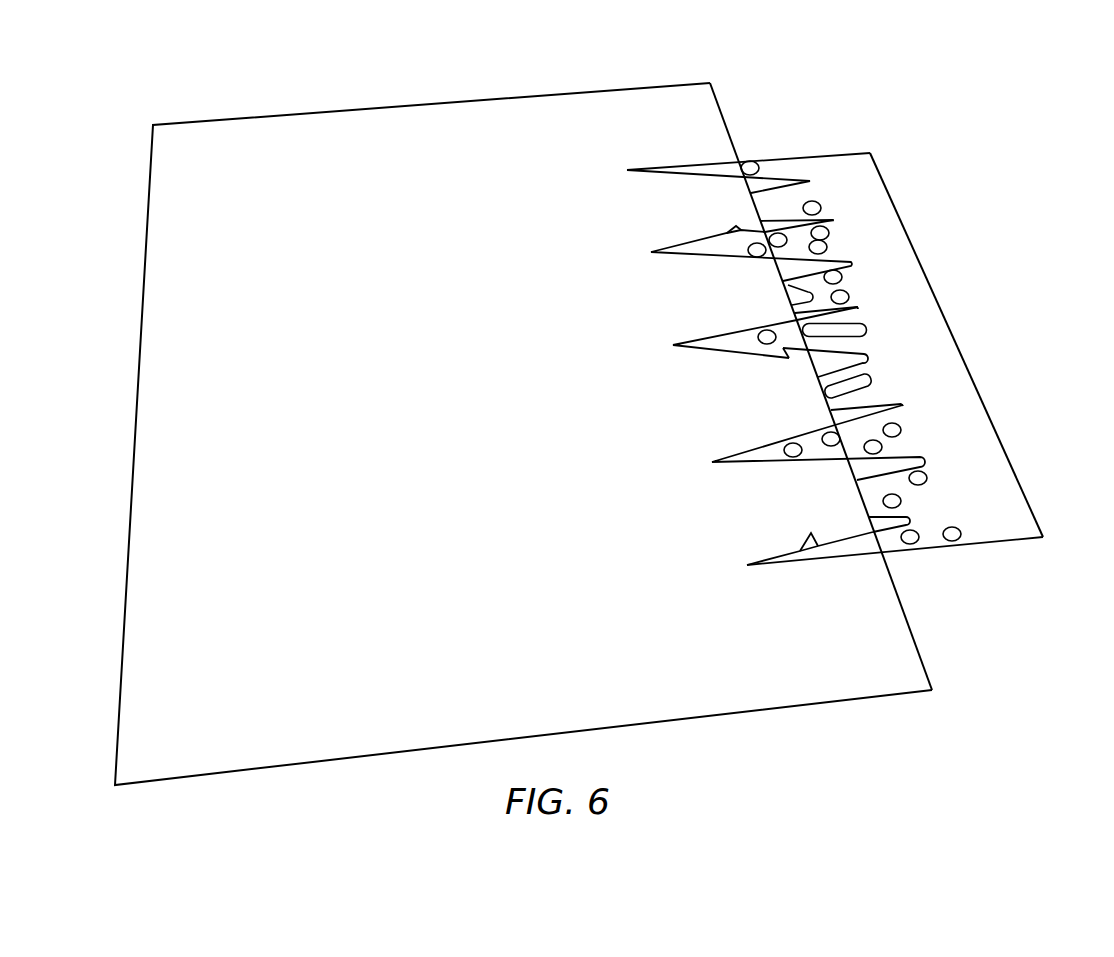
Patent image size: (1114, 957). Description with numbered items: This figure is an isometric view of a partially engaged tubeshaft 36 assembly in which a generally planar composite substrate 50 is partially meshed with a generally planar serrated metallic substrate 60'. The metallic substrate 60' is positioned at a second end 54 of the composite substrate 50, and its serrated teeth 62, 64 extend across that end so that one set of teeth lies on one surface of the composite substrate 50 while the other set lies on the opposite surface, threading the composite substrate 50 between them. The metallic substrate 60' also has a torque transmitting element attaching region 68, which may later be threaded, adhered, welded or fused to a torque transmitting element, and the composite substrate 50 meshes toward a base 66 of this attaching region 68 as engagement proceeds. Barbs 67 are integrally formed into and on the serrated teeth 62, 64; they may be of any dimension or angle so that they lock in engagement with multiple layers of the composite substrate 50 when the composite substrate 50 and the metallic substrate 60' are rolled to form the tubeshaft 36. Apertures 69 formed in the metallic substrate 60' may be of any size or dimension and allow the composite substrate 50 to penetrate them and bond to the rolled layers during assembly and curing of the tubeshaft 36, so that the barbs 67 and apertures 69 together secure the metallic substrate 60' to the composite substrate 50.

The tubeshaft assembly 36 is at (432, 54).
The composite substrate 50 is at (250, 143).
The second end 54 is at (678, 103).
The serrated metallic substrate 60' is at (854, 374).
The serrated teeth 62 is at (857, 548).
The serrated teeth 64 is at (772, 207).
The base 66 is at (825, 180).
The barbs 67 is at (737, 225).
The torque transmitting element attaching region 68 is at (948, 368).
The apertures 69 is at (815, 206).